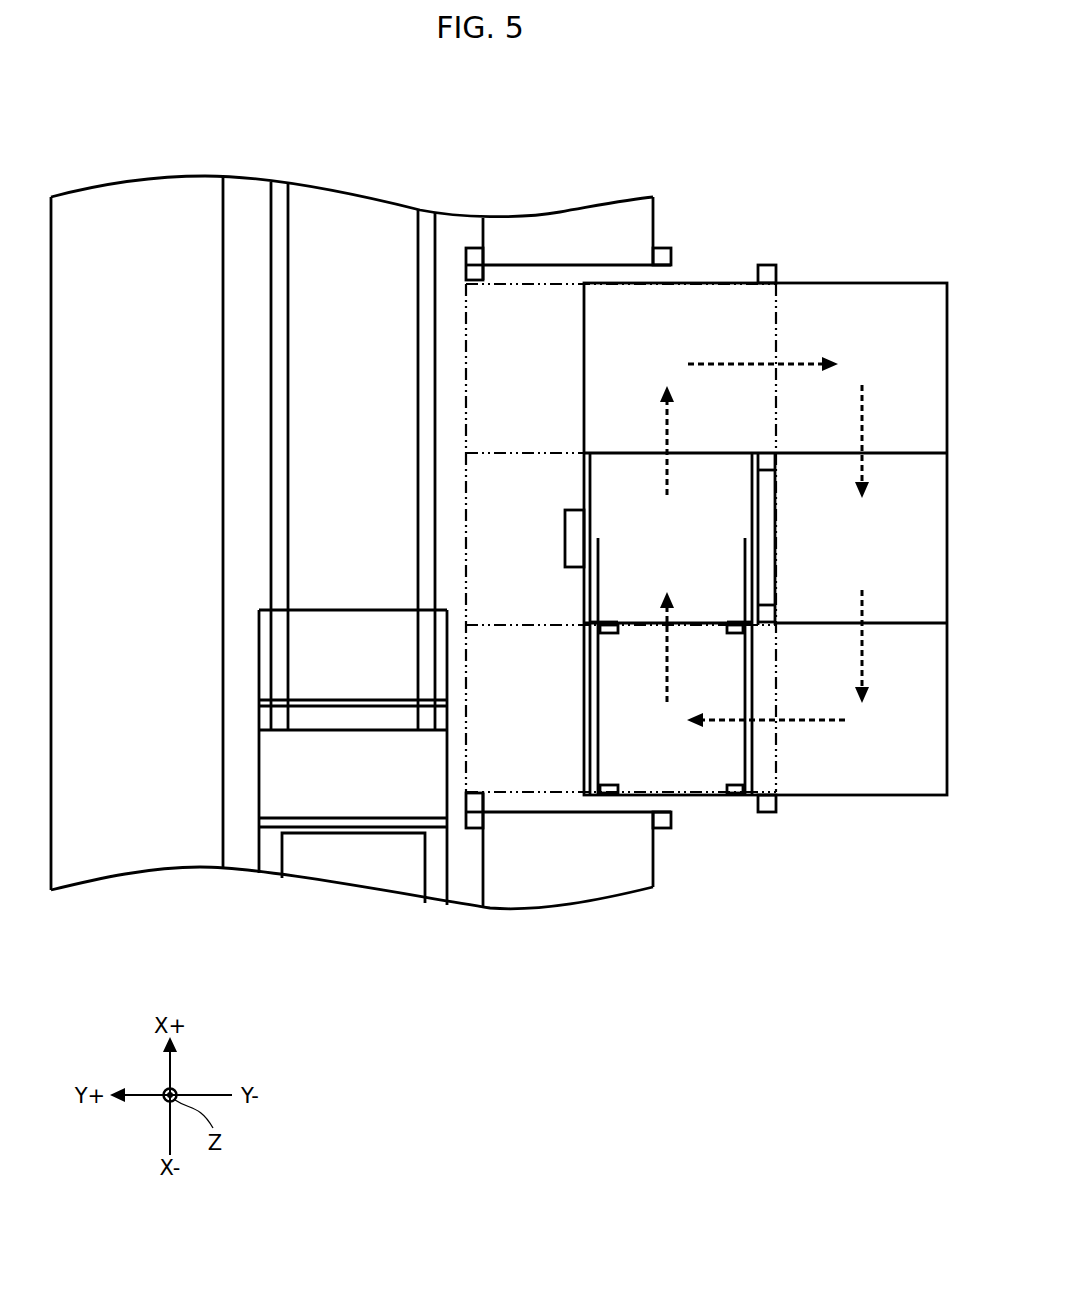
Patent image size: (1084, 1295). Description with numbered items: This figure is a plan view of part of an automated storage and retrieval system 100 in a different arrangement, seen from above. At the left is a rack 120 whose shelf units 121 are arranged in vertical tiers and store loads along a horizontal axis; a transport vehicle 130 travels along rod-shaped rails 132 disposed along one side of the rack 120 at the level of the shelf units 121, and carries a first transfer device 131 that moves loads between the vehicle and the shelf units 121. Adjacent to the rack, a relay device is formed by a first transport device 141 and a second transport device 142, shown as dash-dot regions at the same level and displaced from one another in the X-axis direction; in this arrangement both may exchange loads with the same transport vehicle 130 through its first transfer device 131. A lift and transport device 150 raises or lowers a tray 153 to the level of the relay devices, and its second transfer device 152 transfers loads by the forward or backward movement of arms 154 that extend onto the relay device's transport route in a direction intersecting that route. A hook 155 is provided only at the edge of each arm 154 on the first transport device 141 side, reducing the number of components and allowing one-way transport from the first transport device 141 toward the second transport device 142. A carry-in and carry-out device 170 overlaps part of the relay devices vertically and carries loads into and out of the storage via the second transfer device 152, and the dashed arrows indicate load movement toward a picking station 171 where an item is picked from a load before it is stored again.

The automated storage and retrieval system 100 is at (256, 138).
The rack 120 is at (144, 220).
The shelf unit 121 is at (572, 240).
The transport vehicle 130 is at (318, 610).
The first transfer device 131 is at (368, 700).
The rail 132 is at (428, 220).
The first transport device 141 is at (493, 650).
The second transport device 142 is at (687, 302).
The lift and transport device 150 is at (565, 530).
The second transfer device 152 is at (584, 472).
The tray 153 is at (655, 548).
The arm 154 is at (748, 750).
The hook 155 is at (612, 795).
The carry-in and carry-out device 170 is at (848, 295).
The picking station 171 is at (837, 560).